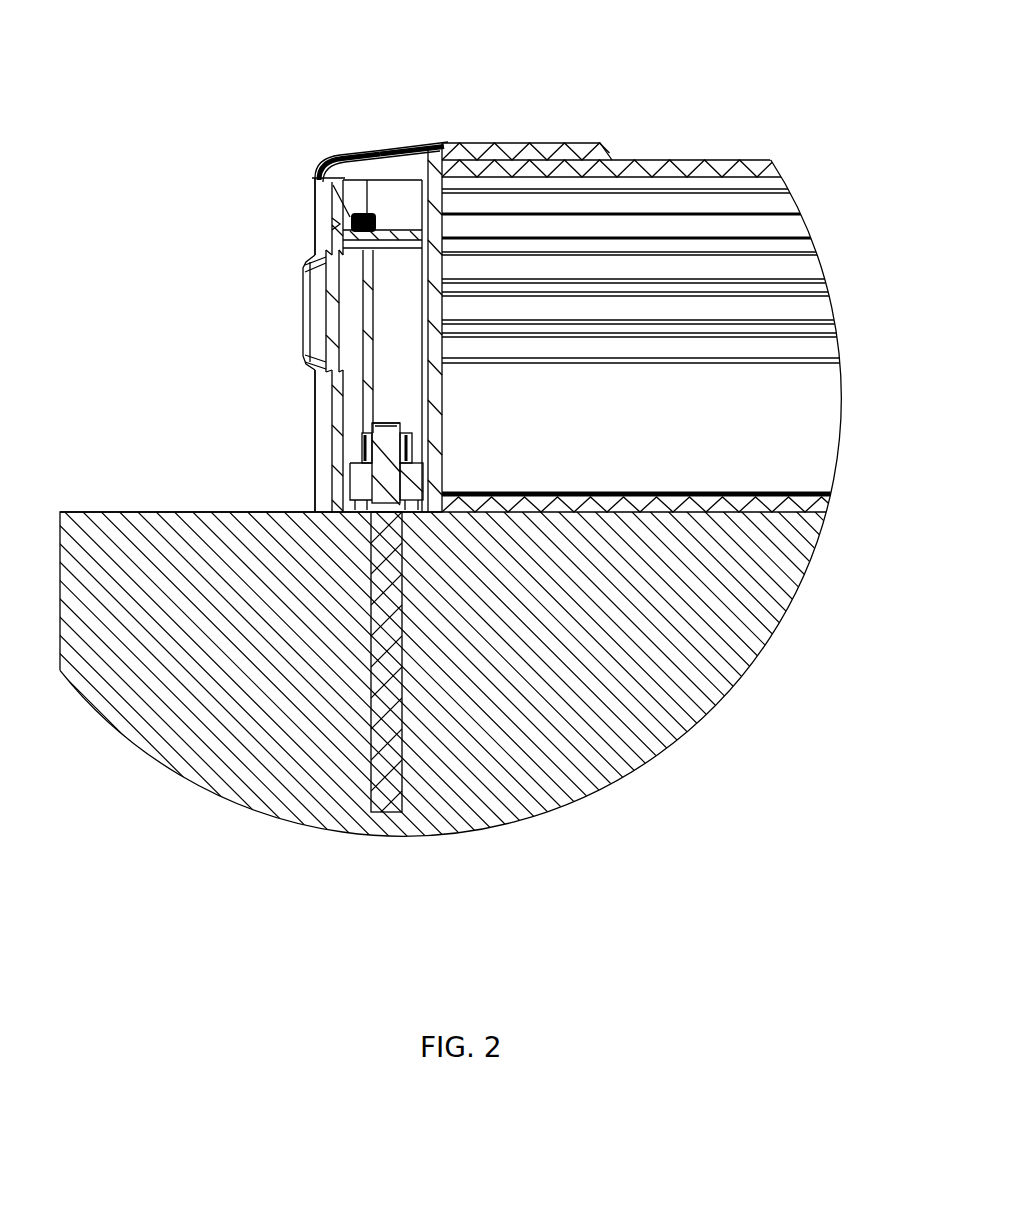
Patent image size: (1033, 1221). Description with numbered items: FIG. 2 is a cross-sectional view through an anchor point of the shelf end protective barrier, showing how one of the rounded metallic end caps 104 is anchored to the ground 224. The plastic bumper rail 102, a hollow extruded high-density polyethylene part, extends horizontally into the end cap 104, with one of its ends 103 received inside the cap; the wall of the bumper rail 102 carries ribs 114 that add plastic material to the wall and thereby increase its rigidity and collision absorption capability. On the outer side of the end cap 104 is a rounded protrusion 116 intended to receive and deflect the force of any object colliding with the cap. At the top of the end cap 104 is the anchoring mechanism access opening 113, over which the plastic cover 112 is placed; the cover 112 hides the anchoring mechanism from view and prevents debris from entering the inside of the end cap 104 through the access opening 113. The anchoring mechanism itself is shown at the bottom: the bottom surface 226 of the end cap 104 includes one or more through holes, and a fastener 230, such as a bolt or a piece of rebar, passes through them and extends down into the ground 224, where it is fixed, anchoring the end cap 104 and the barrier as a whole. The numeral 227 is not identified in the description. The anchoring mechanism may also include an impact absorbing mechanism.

The plastic bumper rail 102 is at (665, 158).
The ends 103 is at (310, 400).
The rounded metallic end cap 104 is at (315, 215).
The plastic cover 112 is at (413, 148).
The anchoring mechanism access opening 113 is at (340, 155).
The ribs 114 is at (622, 335).
The rounded protrusion 116 is at (303, 305).
The ground 224 is at (200, 793).
The bottom surface 226 is at (345, 500).
The nut 227 is at (418, 468).
The fastener 230 is at (378, 432).